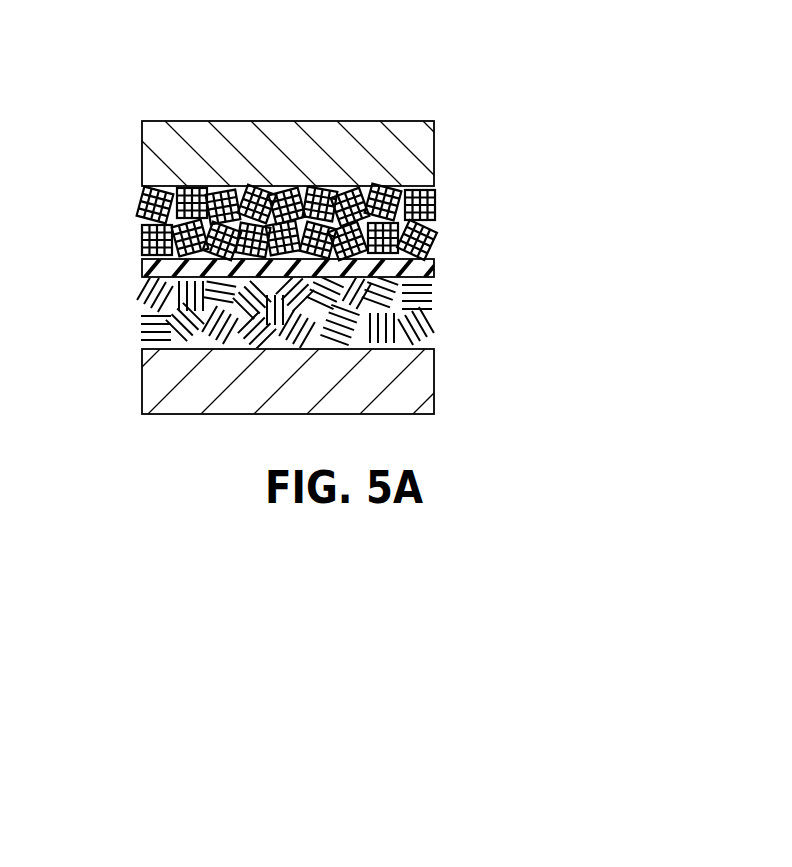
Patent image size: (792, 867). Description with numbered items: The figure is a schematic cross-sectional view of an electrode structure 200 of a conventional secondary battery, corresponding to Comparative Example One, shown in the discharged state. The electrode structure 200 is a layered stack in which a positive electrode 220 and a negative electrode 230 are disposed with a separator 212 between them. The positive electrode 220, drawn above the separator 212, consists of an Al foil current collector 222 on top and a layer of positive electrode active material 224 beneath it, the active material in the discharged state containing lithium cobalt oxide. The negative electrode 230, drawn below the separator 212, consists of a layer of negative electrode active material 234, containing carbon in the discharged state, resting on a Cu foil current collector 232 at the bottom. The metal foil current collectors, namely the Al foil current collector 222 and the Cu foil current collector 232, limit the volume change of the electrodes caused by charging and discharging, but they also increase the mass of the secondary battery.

The electrode structure 200 is at (302, 112).
The positive electrode 220 is at (605, 132).
The Al foil current collector 222 is at (434, 160).
The positive electrode active material 224 is at (428, 252).
The separator 212 is at (434, 268).
The negative electrode 230 is at (605, 303).
The negative electrode active material 234 is at (432, 295).
The Cu foil current collector 232 is at (434, 383).